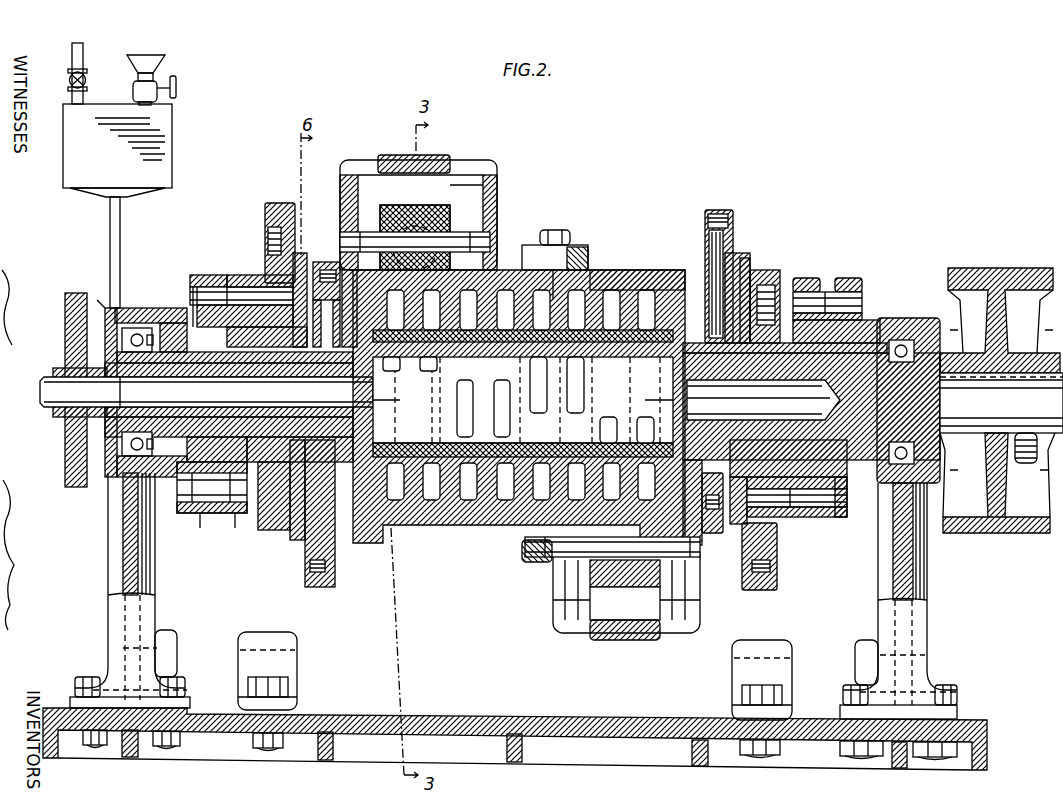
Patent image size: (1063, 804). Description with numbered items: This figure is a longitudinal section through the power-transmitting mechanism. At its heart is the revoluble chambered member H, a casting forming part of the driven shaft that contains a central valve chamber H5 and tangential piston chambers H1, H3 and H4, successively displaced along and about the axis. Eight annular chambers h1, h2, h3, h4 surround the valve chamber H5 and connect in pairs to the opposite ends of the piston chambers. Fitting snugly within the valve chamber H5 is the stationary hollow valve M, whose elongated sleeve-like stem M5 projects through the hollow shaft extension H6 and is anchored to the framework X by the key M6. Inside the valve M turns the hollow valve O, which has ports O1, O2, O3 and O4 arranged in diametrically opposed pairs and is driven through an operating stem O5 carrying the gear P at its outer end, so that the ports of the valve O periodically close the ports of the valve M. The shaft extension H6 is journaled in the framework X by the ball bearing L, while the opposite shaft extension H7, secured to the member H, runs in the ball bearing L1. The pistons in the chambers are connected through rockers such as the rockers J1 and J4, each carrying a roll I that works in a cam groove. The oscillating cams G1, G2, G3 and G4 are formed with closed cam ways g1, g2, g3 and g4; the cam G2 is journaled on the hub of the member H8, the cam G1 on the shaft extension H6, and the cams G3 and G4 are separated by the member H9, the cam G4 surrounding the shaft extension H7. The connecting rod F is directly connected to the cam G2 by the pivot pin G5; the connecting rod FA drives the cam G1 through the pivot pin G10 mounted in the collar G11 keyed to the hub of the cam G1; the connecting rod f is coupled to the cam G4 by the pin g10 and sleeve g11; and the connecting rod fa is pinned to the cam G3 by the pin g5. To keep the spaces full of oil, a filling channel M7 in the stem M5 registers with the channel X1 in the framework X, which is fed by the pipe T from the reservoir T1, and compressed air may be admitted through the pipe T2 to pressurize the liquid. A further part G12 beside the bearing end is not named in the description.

The reservoir T1 is at (117, 150).
The pipe T is at (110, 211).
The pipe T2 is at (65, 73).
The ball bearing L is at (100, 306).
The gear P is at (65, 312).
The channel X1 is at (122, 337).
The filling channel M7 is at (107, 357).
The operating stem O5 is at (44, 386).
The key M6 is at (112, 422).
The hollow shaft extension H6 is at (122, 440).
The bearing cap G12 is at (178, 320).
The sleeve-like stem M5 is at (182, 352).
The connecting rod F is at (197, 287).
The pivot pin G5 is at (211, 287).
The cam G2 is at (242, 287).
The cam way g2 is at (265, 215).
The member H8 is at (348, 240).
The roll I is at (327, 262).
The piston chamber H1 is at (387, 177).
The rocker J1 is at (412, 232).
The piston chamber H3 is at (522, 260).
The stationary hollow valve M is at (565, 297).
The central valve chamber H5 is at (593, 297).
The chambered rotatable member H is at (450, 527).
The annular chambers h1 is at (413, 310).
The annular chambers h2 is at (487, 310).
The annular chambers h3 is at (559, 310).
The annular chambers h4 is at (629, 310).
The hollow valve O is at (470, 523).
The ports O1 is at (430, 371).
The ports O2 is at (475, 395).
The ports O3 is at (540, 402).
The ports O4 is at (641, 360).
The shaft extension H7 is at (745, 423).
The sleeve g11 is at (847, 347).
The ball bearing L1 is at (911, 340).
The cam way g4 is at (708, 225).
The cam G4 is at (700, 270).
The member H9 is at (748, 265).
The cam G3 is at (780, 292).
The connecting rod f is at (850, 279).
The pin g10 is at (830, 305).
The pin g5 is at (795, 518).
The connecting rod fa is at (832, 518).
The cam way g3 is at (777, 585).
The rocker J4 is at (611, 585).
The piston chamber H4 is at (622, 641).
The framework X is at (110, 615).
The cam G1 is at (305, 578).
The cam way g1 is at (335, 565).
The pivot pin G10 is at (265, 475).
The collar G11 is at (178, 450).
The connecting rod FA is at (234, 516).